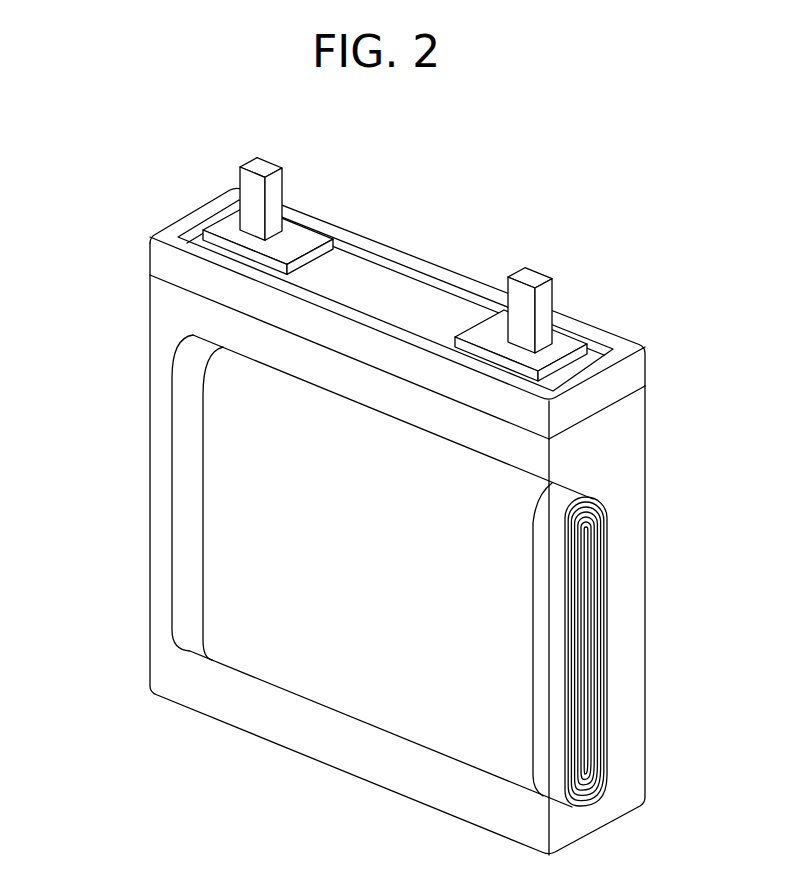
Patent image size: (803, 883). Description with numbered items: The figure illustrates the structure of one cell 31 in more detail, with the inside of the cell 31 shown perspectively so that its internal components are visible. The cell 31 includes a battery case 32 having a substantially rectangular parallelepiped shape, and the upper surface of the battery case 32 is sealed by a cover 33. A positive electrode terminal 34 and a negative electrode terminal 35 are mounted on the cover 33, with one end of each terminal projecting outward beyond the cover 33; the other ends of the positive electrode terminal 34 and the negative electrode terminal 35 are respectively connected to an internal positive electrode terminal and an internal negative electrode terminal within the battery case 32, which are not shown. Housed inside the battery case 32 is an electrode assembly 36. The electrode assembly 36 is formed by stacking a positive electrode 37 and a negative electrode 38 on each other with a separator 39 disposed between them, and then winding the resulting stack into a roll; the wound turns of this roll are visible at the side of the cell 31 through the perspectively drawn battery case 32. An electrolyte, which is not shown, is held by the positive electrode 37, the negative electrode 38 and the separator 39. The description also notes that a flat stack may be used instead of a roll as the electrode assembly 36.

The cell 31 is at (539, 172).
The battery case 32 is at (453, 253).
The cover 33 is at (622, 345).
The positive electrode terminal 34 is at (262, 158).
The negative electrode terminal 35 is at (529, 275).
The electrode assembly 36 is at (283, 706).
The positive electrode 37 is at (187, 495).
The negative electrode 38 is at (558, 640).
The separator 39 is at (417, 680).